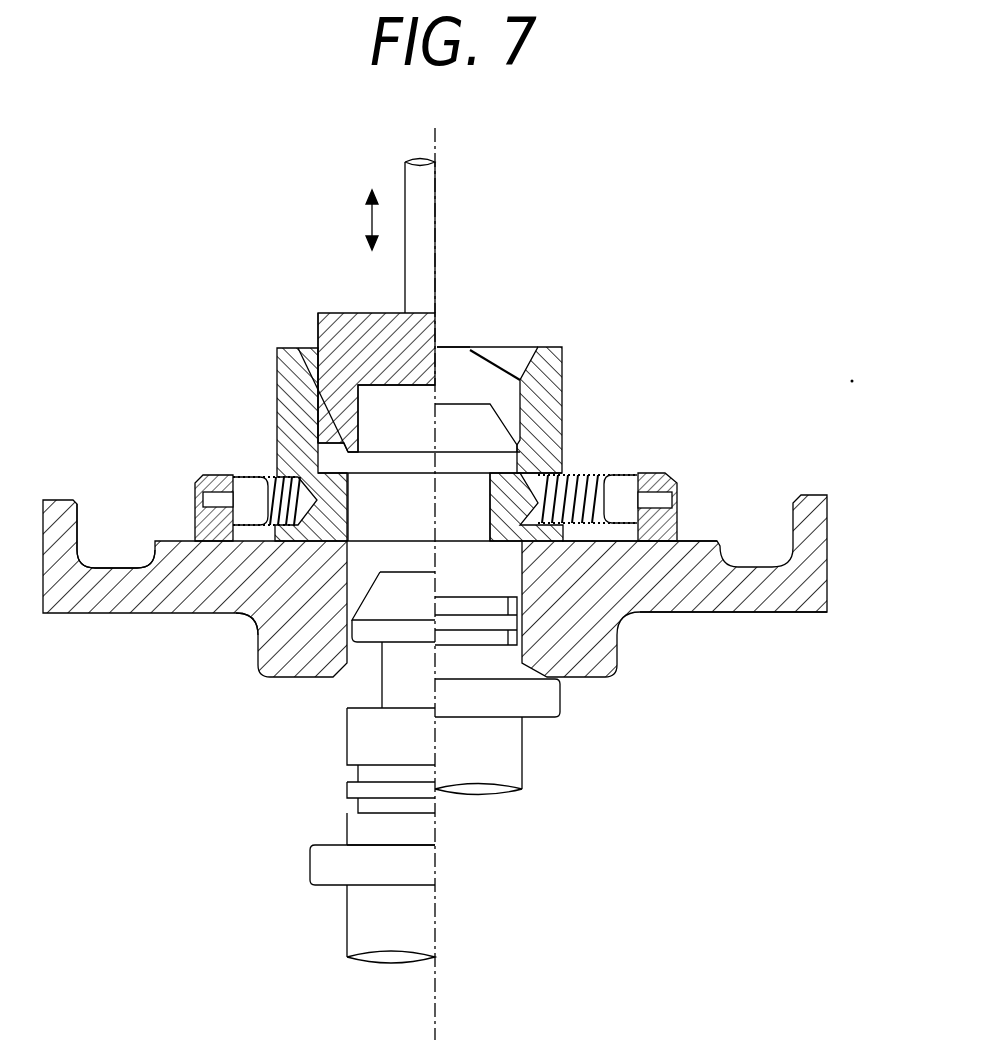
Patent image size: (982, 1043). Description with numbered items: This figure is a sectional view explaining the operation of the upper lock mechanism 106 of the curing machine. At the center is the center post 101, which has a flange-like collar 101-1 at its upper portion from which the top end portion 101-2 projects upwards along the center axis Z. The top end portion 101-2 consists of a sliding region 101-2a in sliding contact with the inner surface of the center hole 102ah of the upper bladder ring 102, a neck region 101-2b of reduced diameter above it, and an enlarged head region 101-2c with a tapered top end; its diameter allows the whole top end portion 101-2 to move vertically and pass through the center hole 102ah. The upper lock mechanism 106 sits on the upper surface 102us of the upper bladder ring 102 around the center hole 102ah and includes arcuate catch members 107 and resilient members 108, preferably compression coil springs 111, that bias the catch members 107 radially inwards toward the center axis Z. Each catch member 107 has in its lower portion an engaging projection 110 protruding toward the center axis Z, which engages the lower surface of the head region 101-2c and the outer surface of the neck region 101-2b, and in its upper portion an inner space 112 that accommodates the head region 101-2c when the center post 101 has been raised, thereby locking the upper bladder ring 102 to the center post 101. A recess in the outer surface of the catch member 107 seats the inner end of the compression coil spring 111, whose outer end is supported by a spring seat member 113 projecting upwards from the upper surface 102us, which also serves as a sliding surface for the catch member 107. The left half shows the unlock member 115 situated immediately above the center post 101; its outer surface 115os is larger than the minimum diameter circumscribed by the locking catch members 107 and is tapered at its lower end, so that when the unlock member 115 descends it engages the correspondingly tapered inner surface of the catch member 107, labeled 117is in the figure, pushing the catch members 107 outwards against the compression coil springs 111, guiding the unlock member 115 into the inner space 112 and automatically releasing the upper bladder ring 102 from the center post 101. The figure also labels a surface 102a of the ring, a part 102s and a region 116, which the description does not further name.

The center axis Z is at (437, 150).
The center post 101 is at (347, 918).
The flange-like collar 101-1 is at (310, 875).
The top end portion 101-2 is at (340, 760).
The sliding region 101-2a is at (347, 731).
The neck region 101-2b is at (381, 677).
The head region 101-2c is at (258, 637).
The upper bladder ring 102 is at (760, 572).
The lower surface of base plate 102a is at (723, 617).
The upper surface of the upper bladder ring 102us is at (710, 540).
The center hole of the upper bladder ring 102ah is at (257, 565).
The set screw 102s is at (200, 505).
The upper lock mechanism 106 is at (548, 348).
The catch member 107 is at (555, 410).
The resilient member 108 is at (652, 474).
The engaging projection 110 is at (487, 511).
The compression coil spring 111 is at (258, 473).
The inner space 112 is at (473, 380).
The spring seat member 113 is at (667, 475).
The unlock member 115 is at (356, 333).
The outer surface of the unlock member 115os is at (318, 322).
The cavity 116 is at (387, 410).
The inner conical surface 117is is at (505, 393).